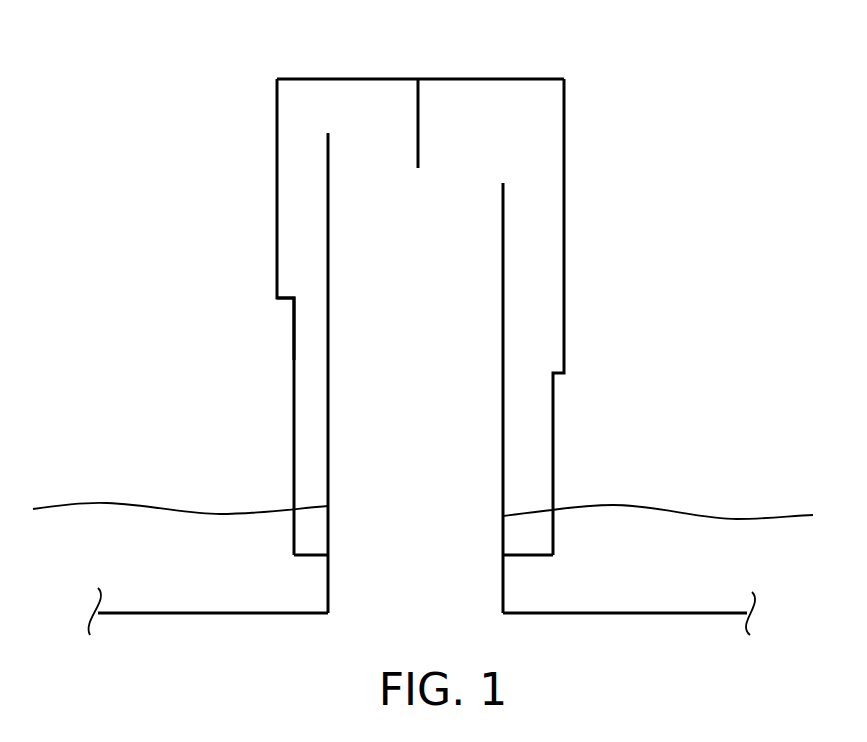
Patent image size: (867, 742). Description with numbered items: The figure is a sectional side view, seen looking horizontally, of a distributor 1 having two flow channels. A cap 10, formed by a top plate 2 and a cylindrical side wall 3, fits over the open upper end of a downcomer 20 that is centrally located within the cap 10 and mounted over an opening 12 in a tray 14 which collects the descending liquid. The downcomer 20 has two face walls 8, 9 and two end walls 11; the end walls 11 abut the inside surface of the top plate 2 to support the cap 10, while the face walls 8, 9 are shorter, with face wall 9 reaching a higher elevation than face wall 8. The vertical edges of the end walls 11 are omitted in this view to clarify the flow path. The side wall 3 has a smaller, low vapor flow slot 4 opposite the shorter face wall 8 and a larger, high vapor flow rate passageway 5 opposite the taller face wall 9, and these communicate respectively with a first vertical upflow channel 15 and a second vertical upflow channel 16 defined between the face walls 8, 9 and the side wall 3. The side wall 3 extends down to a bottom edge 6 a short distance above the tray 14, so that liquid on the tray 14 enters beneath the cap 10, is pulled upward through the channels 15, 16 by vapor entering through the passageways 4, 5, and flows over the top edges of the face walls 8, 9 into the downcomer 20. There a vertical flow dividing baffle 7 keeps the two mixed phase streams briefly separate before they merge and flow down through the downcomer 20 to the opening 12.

The distributor 1 is at (670, 81).
The top plate 2 is at (345, 78).
The cylindrical side wall 3 is at (277, 105).
The low vapor flow slot 4 is at (556, 497).
The high vapor flow rate passageway 5 is at (285, 345).
The bottom edge 6 is at (297, 557).
The vertical flow dividing baffle 7 is at (421, 128).
The face wall 8 is at (505, 289).
The face wall 9 is at (328, 245).
The cap 10 is at (567, 74).
The end walls 11 is at (432, 276).
The opening 12 is at (415, 615).
The tray 14 is at (726, 612).
The first vertical upflow channel 15 is at (538, 257).
The second vertical upflow channel 16 is at (302, 210).
The downcomer 20 is at (508, 182).